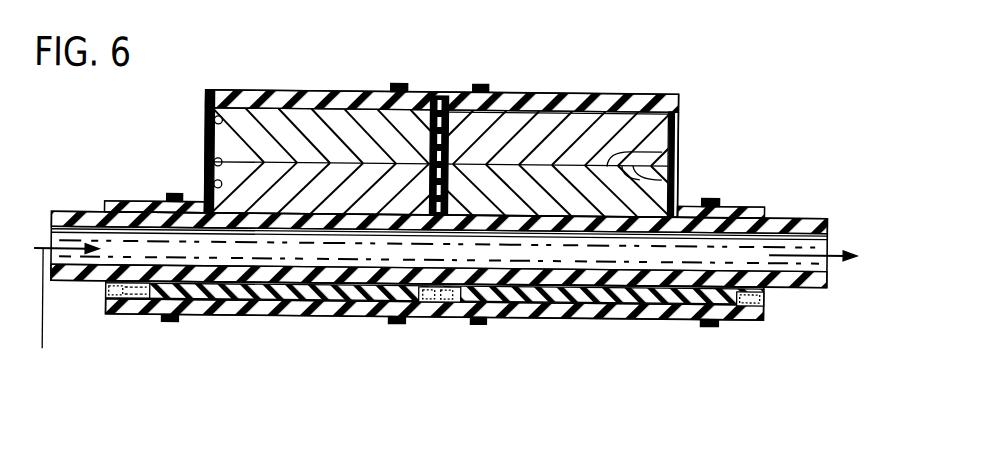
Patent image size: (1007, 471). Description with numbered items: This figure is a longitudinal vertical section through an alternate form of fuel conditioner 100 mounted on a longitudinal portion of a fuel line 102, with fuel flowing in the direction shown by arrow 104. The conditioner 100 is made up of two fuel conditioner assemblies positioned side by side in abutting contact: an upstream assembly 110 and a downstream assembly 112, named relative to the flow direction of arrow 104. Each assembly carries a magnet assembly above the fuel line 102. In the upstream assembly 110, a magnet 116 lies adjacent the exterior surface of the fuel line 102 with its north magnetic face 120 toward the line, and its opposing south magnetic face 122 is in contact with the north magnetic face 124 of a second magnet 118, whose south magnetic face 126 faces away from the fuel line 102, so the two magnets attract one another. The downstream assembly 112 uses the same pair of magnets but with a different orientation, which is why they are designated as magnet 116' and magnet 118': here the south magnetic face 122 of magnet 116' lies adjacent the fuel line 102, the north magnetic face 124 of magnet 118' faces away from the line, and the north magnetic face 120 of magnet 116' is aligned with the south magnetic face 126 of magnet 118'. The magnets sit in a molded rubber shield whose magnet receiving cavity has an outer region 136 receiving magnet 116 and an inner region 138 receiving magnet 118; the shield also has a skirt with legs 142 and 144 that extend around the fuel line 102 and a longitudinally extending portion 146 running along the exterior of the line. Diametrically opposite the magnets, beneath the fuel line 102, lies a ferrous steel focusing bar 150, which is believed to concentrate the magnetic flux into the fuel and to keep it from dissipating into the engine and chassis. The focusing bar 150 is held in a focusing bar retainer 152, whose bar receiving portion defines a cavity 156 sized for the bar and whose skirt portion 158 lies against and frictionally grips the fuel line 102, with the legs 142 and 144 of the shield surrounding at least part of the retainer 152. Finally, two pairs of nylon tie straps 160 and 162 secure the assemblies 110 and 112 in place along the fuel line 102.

The fuel conditioner 100 is at (218, 47).
The fuel line 102 is at (80, 281).
The arrow 104 is at (442, 309).
The upstream assembly 110 is at (306, 67).
The downstream assembly 112 is at (520, 76).
The magnet 116 is at (300, 179).
The magnet 116' is at (581, 189).
The second magnet 118 is at (301, 135).
The magnet 118' is at (575, 136).
The north magnetic face 120 is at (676, 141).
The south magnetic face 122 is at (687, 206).
The north magnetic face 124 is at (587, 111).
The south magnetic face 126 is at (655, 175).
The outer region 136 is at (205, 182).
The inner region 138 is at (207, 110).
The leg 142 is at (657, 308).
The leg 144 is at (285, 306).
The longitudinally extending portion 146 is at (127, 213).
The focusing bar 150 is at (382, 288).
The focusing bar retainer 152 is at (222, 302).
The cavity 156 is at (312, 298).
The skirt portion 158 is at (128, 295).
The tie strap 160 is at (180, 322).
The tie strap 162 is at (483, 321).